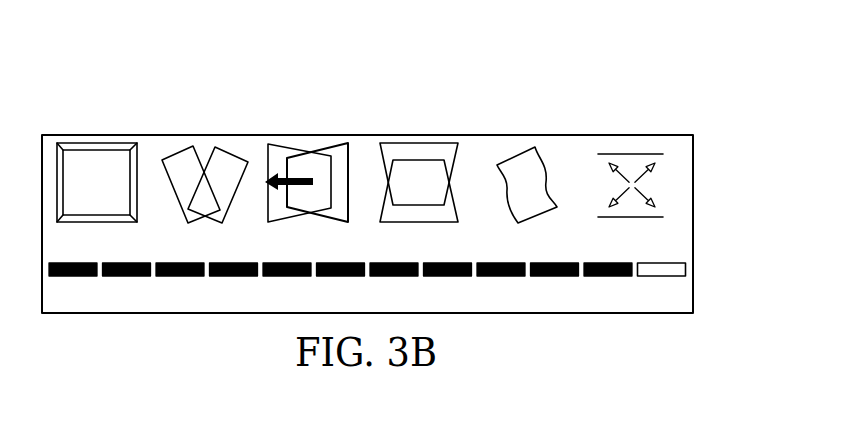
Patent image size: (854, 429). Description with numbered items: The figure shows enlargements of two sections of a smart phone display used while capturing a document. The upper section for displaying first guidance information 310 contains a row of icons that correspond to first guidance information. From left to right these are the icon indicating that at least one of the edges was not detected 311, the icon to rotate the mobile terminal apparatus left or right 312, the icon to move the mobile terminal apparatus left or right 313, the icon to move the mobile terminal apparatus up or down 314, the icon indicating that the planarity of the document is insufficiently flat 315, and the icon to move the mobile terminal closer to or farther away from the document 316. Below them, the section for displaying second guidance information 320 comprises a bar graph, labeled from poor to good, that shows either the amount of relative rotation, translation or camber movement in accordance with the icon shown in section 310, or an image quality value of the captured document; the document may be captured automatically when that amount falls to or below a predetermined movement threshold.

The section for displaying first guidance information 310 is at (705, 189).
The edge-not-detected icon 311 is at (97, 142).
The rotate left/right icon 312 is at (177, 153).
The move left/right icon 313 is at (285, 143).
The move up/down icon 314 is at (418, 143).
The insufficient planarity icon 315 is at (520, 150).
The move closer/farther icon 316 is at (630, 153).
The section for displaying second guidance information 320 is at (705, 272).